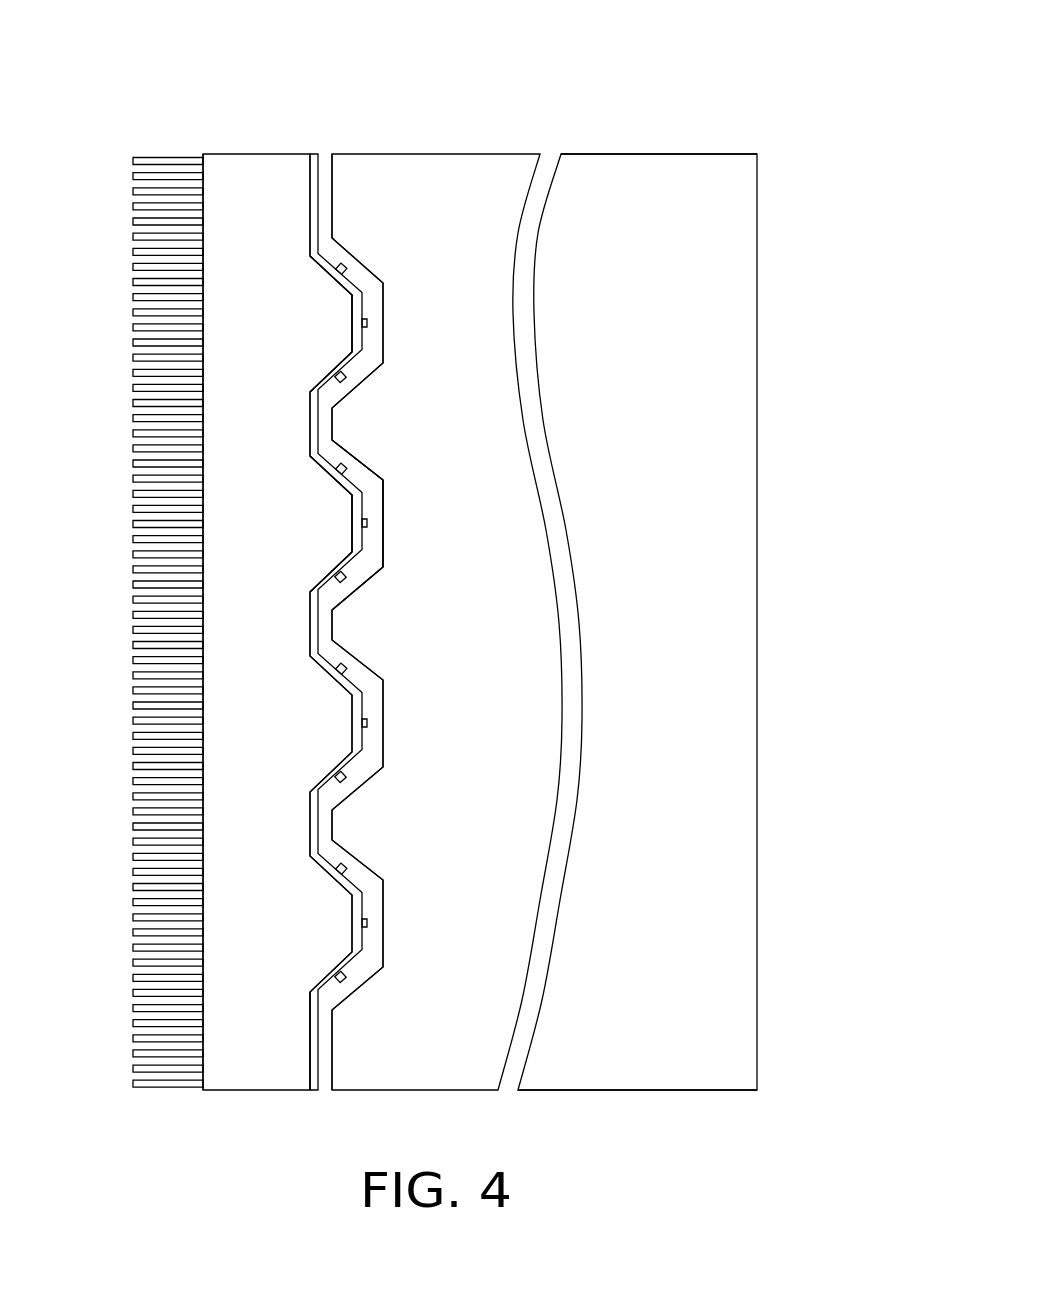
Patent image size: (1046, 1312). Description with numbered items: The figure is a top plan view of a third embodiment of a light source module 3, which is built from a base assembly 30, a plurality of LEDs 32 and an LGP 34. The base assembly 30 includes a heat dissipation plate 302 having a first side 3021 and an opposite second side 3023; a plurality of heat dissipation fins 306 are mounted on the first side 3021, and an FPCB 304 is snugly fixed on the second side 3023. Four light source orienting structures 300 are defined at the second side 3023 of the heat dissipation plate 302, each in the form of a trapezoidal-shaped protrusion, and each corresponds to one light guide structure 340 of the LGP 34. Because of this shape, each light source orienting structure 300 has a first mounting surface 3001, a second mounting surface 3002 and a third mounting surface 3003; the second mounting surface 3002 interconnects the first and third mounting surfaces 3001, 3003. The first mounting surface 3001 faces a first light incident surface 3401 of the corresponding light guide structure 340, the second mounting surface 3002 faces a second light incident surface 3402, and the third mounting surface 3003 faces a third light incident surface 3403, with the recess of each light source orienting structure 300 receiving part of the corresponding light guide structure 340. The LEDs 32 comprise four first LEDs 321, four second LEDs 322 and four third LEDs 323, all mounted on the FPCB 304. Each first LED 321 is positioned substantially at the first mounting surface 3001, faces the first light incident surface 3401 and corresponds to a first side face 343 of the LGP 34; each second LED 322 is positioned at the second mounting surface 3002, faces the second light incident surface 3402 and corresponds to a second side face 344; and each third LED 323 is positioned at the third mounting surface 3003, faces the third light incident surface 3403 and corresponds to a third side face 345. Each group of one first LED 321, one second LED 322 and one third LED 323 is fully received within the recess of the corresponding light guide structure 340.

The light source module 3 is at (408, 42).
The base assembly 30 is at (335, 86).
The heat dissipation fins 306 is at (165, 161).
The heat dissipation plate 302 is at (258, 168).
The FPCB 304 is at (316, 170).
The first side 3021 is at (217, 1063).
The second side 3023 is at (302, 1062).
The light source orienting structure 300 is at (348, 325).
The first mounting surface 3001 is at (322, 477).
The second mounting surface 3002 is at (352, 523).
The third mounting surface 3003 is at (322, 573).
The LEDs 32 is at (62, 722).
The first LED 321 is at (338, 678).
The second LED 322 is at (362, 730).
The third LED 323 is at (338, 783).
The LGP 34 is at (376, 198).
The light guide structure 340 is at (396, 323).
The first light incident surface 3401 is at (366, 457).
The second light incident surface 3402 is at (388, 523).
The third light incident surface 3403 is at (367, 585).
The first side face 343 is at (684, 152).
The second side face 344 is at (766, 930).
The third side face 345 is at (675, 1097).